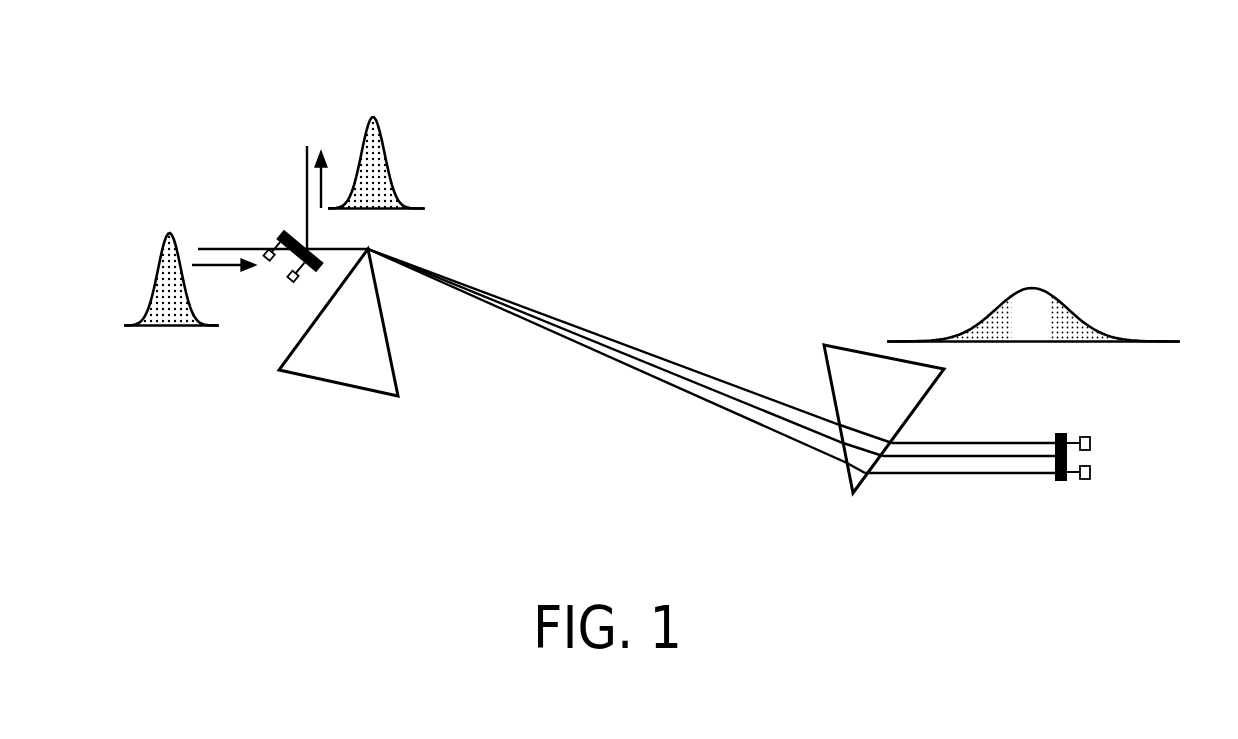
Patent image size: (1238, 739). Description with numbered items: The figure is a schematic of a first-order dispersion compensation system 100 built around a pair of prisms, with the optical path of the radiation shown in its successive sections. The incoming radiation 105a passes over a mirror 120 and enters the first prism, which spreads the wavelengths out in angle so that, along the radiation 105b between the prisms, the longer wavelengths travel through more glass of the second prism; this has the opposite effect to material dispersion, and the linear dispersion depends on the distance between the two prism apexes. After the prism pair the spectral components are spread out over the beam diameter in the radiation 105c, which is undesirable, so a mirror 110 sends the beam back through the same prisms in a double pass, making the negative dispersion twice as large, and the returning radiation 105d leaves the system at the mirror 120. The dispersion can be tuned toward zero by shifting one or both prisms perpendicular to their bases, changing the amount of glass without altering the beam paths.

The first-order dispersion compensation system 100 is at (816, 95).
The radiation 105a is at (228, 247).
The radiation 105b is at (607, 338).
The radiation 105c is at (963, 477).
The radiation 105d is at (306, 159).
The mirror 110 is at (1060, 484).
The mirror 120 is at (286, 282).